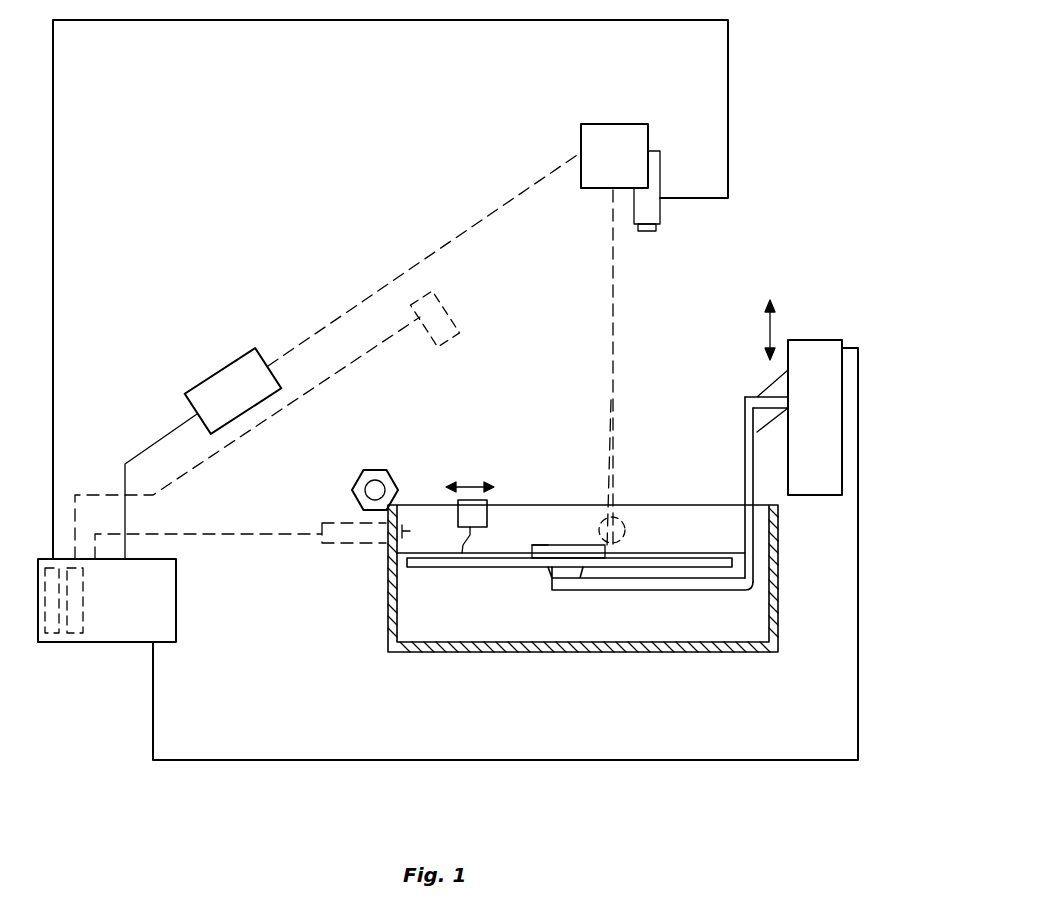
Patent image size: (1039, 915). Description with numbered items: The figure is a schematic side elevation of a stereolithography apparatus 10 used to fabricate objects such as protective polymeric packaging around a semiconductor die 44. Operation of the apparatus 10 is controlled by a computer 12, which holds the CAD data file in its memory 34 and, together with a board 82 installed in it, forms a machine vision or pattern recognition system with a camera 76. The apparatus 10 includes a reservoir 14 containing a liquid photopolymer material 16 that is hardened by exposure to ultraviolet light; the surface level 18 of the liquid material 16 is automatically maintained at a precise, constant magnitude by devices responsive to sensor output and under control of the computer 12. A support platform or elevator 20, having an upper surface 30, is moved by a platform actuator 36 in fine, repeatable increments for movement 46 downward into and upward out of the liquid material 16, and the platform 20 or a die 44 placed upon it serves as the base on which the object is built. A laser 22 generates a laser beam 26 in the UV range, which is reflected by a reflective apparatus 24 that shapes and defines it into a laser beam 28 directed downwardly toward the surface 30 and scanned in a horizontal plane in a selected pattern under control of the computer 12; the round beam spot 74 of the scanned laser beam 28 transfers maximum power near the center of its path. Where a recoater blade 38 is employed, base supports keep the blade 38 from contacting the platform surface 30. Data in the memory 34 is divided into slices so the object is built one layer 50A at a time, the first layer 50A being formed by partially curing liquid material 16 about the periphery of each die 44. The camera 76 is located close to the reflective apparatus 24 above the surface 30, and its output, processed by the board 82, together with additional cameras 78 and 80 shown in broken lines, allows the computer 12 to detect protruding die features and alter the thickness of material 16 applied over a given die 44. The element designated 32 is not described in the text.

The apparatus 10 is at (786, 152).
The computer 12 is at (133, 613).
The reservoir 14 is at (663, 653).
The liquid photopolymer material 16 is at (738, 624).
The surface level 18 is at (433, 556).
The support platform or elevator 20 is at (425, 568).
The laser 22 is at (221, 403).
The reflective apparatus 24 is at (627, 167).
The laser beam 26 is at (468, 228).
The laser beam 28 is at (613, 290).
The upper surface 30 is at (715, 560).
The support 32 is at (750, 575).
The memory 34 is at (50, 627).
The platform actuator 36 is at (828, 436).
The recoater blade 38 is at (477, 517).
The semiconductor die 44 is at (548, 545).
The movement 46 is at (768, 330).
The layer 50A is at (567, 555).
The round beam spot 74 is at (627, 527).
The camera 76 is at (652, 213).
The additional camera 78 is at (353, 538).
The additional camera 80 is at (442, 308).
The board 82 is at (80, 612).